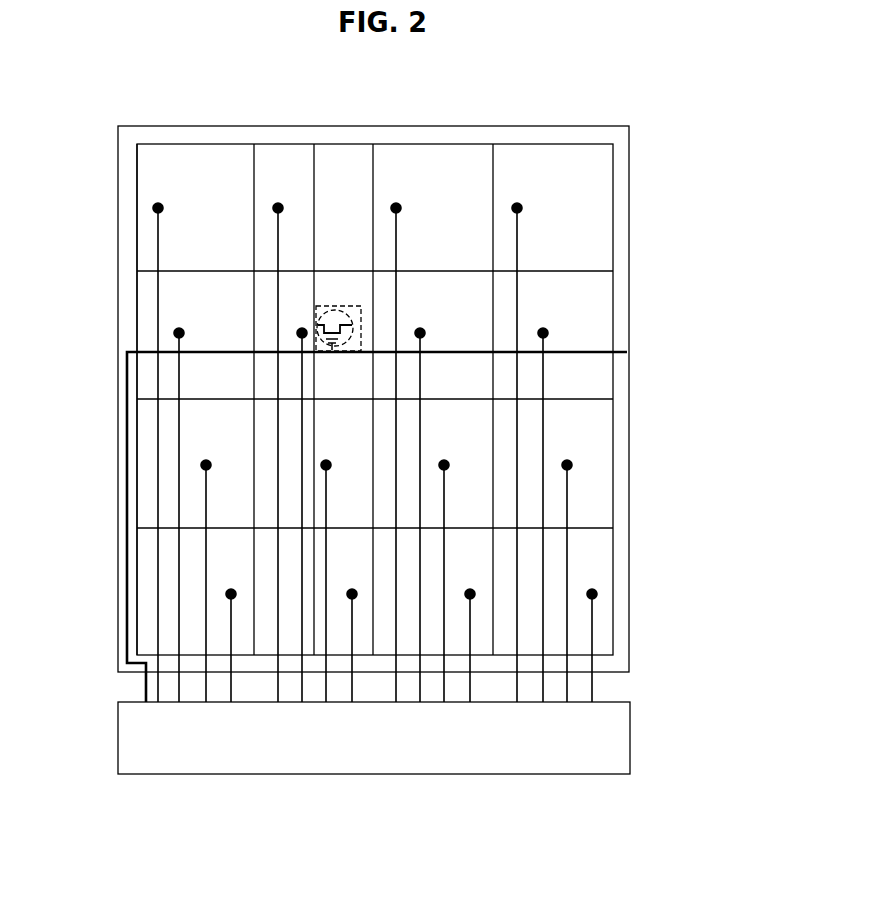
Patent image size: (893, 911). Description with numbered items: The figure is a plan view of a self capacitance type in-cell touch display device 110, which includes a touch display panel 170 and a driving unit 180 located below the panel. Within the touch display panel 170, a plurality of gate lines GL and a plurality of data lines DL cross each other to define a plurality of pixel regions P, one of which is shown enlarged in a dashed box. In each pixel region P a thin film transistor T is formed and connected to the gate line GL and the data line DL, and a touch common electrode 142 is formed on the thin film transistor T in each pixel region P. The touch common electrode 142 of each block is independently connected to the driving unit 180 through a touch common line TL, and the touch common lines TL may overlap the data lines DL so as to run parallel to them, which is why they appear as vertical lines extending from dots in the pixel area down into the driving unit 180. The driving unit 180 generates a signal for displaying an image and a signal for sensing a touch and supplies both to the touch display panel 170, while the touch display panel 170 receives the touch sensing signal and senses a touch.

The in-cell touch display device 110 is at (386, 87).
The touch common electrode 142 is at (137, 216).
The touch display panel 170 is at (630, 199).
The driving unit 180 is at (630, 734).
The touch common line TL is at (158, 257).
The data line DL is at (316, 296).
The gate line GL is at (165, 353).
The pixel region P is at (326, 305).
The thin film transistor T is at (353, 352).